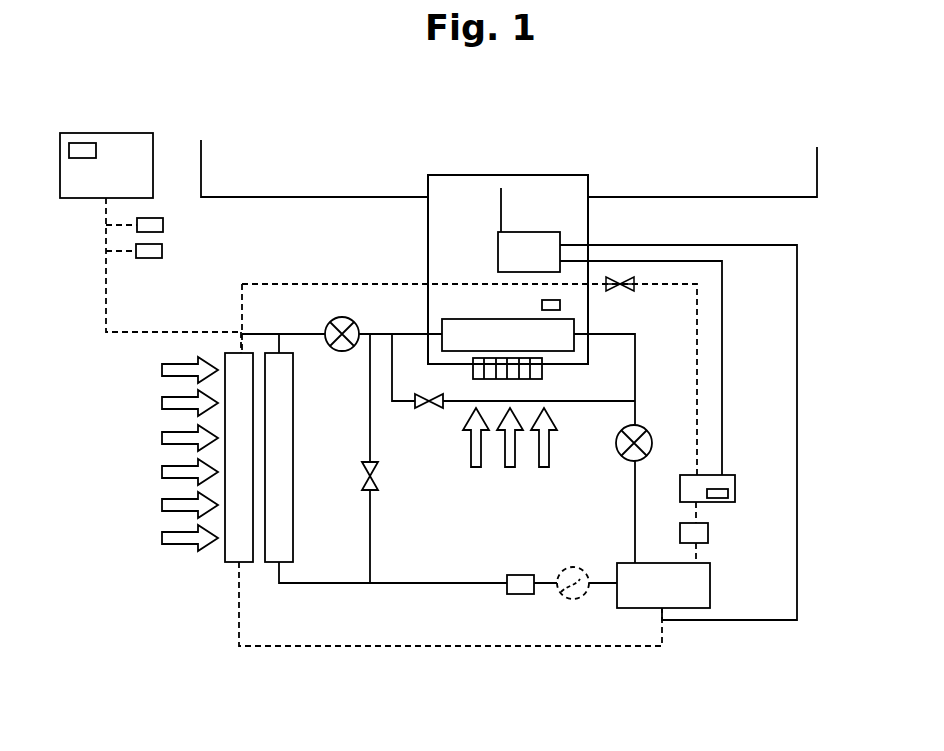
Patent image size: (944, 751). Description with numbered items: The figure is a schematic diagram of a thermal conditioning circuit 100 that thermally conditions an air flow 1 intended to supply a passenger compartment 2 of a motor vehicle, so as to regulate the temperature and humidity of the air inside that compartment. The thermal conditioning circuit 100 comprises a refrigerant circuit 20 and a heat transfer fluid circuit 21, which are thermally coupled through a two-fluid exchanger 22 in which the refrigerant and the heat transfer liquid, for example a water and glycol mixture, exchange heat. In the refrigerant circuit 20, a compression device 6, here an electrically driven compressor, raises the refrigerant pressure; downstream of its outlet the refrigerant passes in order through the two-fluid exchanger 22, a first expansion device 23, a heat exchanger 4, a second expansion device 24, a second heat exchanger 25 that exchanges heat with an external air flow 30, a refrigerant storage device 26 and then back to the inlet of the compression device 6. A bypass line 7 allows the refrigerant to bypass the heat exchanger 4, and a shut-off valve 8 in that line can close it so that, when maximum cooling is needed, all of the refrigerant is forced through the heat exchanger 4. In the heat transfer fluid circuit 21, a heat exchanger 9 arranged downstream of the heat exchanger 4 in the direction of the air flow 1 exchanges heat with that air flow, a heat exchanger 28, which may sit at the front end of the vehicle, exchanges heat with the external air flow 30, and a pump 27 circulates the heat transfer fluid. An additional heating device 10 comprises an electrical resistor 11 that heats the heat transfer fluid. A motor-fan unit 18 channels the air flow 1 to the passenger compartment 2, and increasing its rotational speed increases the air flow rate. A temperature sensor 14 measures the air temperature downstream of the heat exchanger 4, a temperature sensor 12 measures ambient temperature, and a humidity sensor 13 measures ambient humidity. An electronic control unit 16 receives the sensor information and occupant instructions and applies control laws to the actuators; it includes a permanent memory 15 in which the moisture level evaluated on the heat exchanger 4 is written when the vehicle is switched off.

The air flow 1 is at (473, 470).
The passenger compartment 2 is at (458, 172).
The heat exchanger 4 is at (440, 322).
The compression device 6 is at (568, 568).
The bypass line 7 is at (580, 405).
The shut-off valve 8 is at (427, 412).
The heat exchanger 9 is at (553, 214).
The additional heating device 10 is at (727, 472).
The electrical resistor 11 is at (728, 494).
The temperature sensor 12 is at (163, 225).
The humidity sensor 13 is at (162, 251).
The temperature sensor 14 is at (560, 305).
The permanent memory 15 is at (81, 134).
The electronic control unit 16 is at (113, 134).
The motor-fan unit 18 is at (542, 368).
The refrigerant circuit 20 is at (326, 585).
The heat transfer fluid circuit 21 is at (797, 412).
The two-fluid exchanger 22 is at (638, 612).
The first expansion device 23 is at (651, 440).
The second expansion device 24 is at (334, 318).
The second heat exchanger 25 is at (286, 541).
The refrigerant storage device 26 is at (518, 572).
The pump 27 is at (708, 533).
The heat exchanger 28 is at (225, 552).
The external air flow 30 is at (160, 468).
The thermal conditioning circuit 100 is at (605, 201).